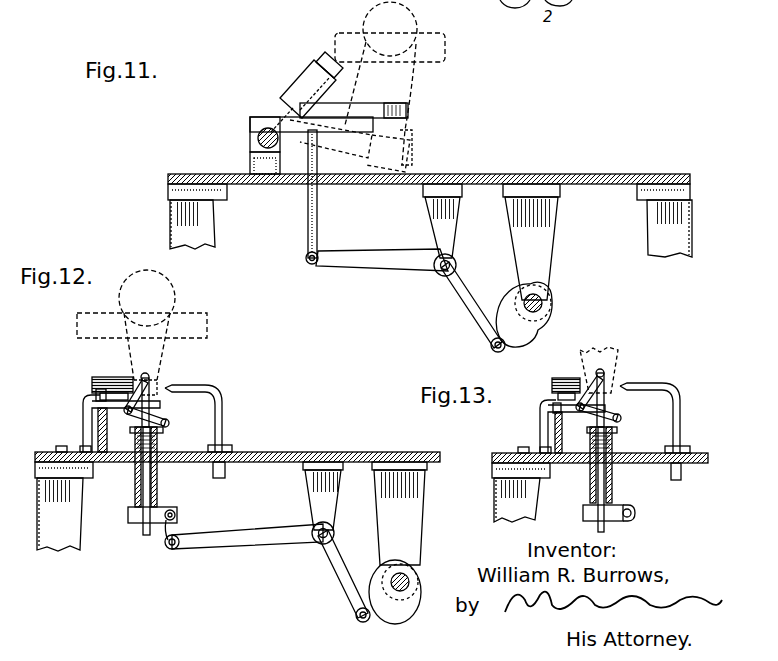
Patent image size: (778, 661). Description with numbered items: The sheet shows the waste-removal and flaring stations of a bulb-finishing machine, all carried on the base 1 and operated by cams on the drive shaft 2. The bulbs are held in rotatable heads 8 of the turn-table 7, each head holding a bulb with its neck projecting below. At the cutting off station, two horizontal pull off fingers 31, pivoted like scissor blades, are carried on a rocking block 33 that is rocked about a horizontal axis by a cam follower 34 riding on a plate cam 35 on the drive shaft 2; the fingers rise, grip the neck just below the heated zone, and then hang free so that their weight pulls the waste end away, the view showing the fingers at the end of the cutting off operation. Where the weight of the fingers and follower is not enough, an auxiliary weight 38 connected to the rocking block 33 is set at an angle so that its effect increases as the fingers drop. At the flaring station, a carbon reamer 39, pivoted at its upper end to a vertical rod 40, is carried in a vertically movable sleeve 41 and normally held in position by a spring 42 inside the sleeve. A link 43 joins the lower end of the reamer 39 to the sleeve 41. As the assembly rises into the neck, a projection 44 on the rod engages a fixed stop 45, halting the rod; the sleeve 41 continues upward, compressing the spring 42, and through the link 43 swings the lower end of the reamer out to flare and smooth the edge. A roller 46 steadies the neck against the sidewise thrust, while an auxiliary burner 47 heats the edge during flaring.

In FIG. 11, the base 1 is at (170, 174).
In FIG. 12, the base 1 is at (308, 452).
In FIG. 13, the base 1 is at (695, 453).
In FIG. 11, the drive shaft 2 is at (545, 304).
In FIG. 12, the drive shaft 2 is at (411, 573).
In FIG. 12, the turn-table 7 is at (80, 318).
In FIG. 11, the bulb holder or head 8 is at (422, 33).
In FIG. 12, the bulb holder or head 8 is at (182, 313).
In FIG. 11, the pull off fingers 31 is at (403, 102).
In FIG. 11, the rocking block 33 is at (248, 139).
In FIG. 11, the cam follower 34 is at (368, 270).
In FIG. 11, the plate cam 35 is at (508, 296).
In FIG. 11, the auxiliary weight 38 is at (303, 82).
In FIG. 12, the reamer 39 is at (150, 378).
In FIG. 13, the reamer 39 is at (595, 372).
In FIG. 12, the vertical rod 40 is at (157, 405).
In FIG. 13, the vertical rod 40 is at (605, 400).
In FIG. 12, the sleeve 41 is at (165, 436).
In FIG. 13, the sleeve 41 is at (617, 433).
In FIG. 12, the spring 42 is at (160, 478).
In FIG. 13, the spring 42 is at (612, 475).
In FIG. 12, the link 43 is at (135, 413).
In FIG. 13, the link 43 is at (590, 414).
In FIG. 12, the projection 44 is at (88, 405).
In FIG. 13, the projection 44 is at (548, 408).
In FIG. 12, the fixed stop 45 is at (93, 394).
In FIG. 13, the fixed stop 45 is at (555, 413).
In FIG. 12, the roller 46 is at (100, 380).
In FIG. 13, the roller 46 is at (550, 383).
In FIG. 12, the auxiliary burner 47 is at (226, 402).
In FIG. 13, the auxiliary burner 47 is at (681, 398).